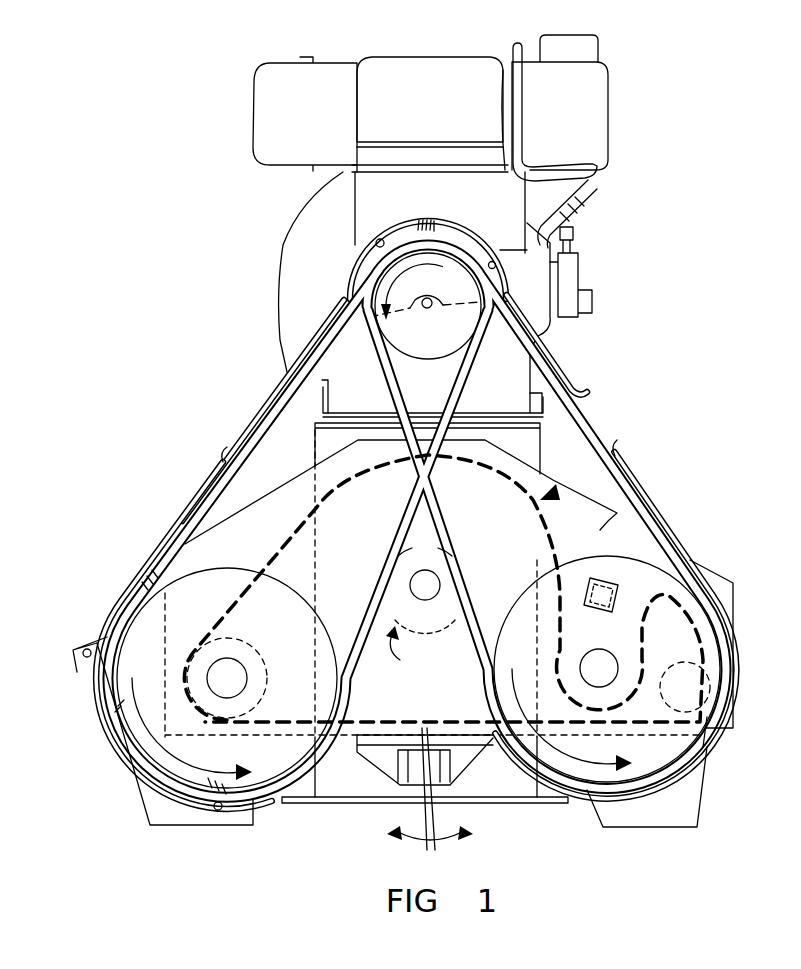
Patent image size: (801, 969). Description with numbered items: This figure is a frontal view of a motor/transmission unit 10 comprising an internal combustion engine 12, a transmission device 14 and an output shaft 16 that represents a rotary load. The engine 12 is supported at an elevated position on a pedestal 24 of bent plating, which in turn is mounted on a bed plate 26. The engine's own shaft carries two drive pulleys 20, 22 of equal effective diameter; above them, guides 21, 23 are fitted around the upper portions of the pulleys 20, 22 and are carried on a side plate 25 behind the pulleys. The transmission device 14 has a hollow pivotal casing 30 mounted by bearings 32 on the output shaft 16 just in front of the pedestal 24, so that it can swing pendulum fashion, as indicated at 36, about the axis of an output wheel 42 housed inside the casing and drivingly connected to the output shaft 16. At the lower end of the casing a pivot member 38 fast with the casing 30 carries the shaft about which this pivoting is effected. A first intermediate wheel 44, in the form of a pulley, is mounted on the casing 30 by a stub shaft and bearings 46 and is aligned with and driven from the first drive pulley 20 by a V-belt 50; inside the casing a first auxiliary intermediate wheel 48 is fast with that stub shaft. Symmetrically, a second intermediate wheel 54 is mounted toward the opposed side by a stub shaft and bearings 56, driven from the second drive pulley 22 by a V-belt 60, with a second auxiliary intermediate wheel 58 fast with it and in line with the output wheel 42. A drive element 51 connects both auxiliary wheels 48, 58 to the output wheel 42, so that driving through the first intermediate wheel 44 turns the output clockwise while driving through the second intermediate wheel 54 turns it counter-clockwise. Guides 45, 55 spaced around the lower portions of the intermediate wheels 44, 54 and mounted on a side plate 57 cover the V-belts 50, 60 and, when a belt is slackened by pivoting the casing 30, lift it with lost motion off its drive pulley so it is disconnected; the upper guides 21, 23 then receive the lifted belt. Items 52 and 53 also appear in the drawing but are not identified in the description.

The motor/transmission unit 10 is at (170, 120).
The internal combustion engine 12 is at (240, 122).
The transmission device 14 is at (178, 500).
The output shaft 16 is at (433, 585).
The first drive pulley 20 is at (440, 303).
The guide 21 is at (456, 242).
The second drive pulley 22 is at (548, 317).
The guide 23 is at (323, 337).
The pedestal 24 is at (545, 438).
The side plate 25 is at (426, 230).
The bed plate 26 is at (500, 803).
The pivotal casing 30 is at (612, 513).
The bearings 32 is at (399, 654).
The pendulum-fashion pivoting 36 is at (440, 835).
The pivot member 38 is at (393, 768).
The output wheel 42 is at (607, 462).
The first intermediate wheel 44 is at (713, 632).
The guide 45 is at (690, 747).
The stub shaft and bearings 46 is at (604, 666).
The first auxiliary intermediate wheel 48 is at (640, 782).
The V-belt 50 is at (647, 510).
The drive element 51 is at (270, 560).
The tension idler 52 is at (722, 672).
The guard hook 53 is at (672, 552).
The second intermediate wheel 54 is at (120, 643).
The guide 55 is at (150, 772).
The stub shaft and bearings 56 is at (233, 687).
The side plate 57 is at (152, 800).
The second auxiliary intermediate wheel 58 is at (118, 712).
The V-belt 60 is at (277, 417).